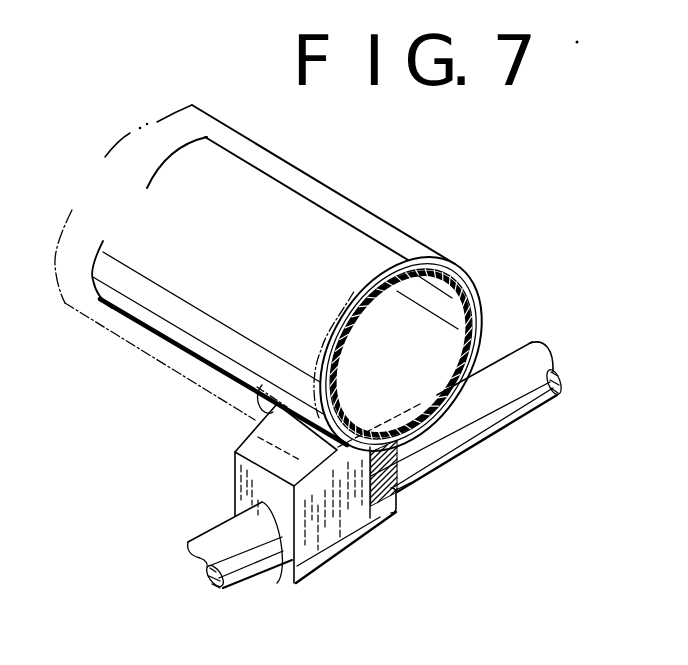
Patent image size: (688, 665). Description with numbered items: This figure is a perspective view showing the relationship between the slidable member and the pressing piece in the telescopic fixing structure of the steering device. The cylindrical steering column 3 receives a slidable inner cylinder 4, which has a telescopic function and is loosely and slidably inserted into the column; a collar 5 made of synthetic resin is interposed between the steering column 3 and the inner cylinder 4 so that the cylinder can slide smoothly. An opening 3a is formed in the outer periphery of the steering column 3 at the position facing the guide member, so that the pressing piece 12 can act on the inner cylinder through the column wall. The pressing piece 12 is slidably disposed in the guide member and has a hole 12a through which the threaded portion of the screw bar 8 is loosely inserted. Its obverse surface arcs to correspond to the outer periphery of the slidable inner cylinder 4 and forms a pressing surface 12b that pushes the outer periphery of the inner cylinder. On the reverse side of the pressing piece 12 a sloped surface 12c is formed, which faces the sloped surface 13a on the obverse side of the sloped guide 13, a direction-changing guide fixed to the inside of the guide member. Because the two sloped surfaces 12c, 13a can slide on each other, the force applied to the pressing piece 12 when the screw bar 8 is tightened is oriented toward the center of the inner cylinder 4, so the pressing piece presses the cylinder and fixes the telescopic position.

The steering column 3 is at (374, 208).
The opening 3a is at (272, 376).
The slidable inner cylinder 4 is at (434, 298).
The collar 5 is at (474, 311).
The screw bar 8 is at (508, 424).
The pressing piece 12 is at (233, 487).
The hole 12a is at (278, 585).
The pressing surface 12b is at (358, 453).
The sloped surface 12c is at (372, 518).
The sloped guide 13 is at (391, 527).
The sloped surface 13a is at (399, 509).